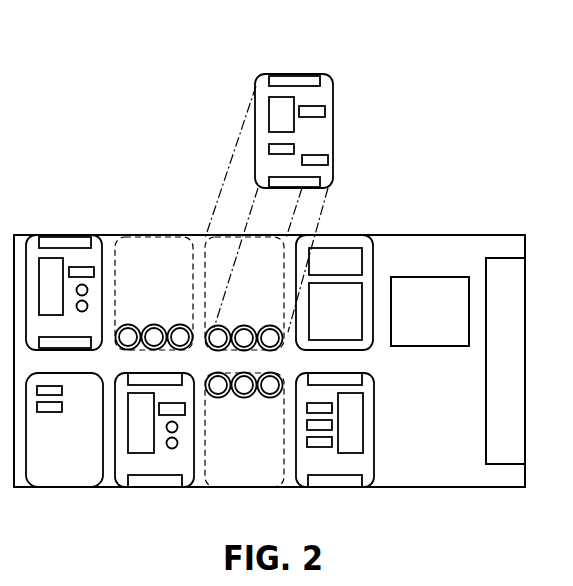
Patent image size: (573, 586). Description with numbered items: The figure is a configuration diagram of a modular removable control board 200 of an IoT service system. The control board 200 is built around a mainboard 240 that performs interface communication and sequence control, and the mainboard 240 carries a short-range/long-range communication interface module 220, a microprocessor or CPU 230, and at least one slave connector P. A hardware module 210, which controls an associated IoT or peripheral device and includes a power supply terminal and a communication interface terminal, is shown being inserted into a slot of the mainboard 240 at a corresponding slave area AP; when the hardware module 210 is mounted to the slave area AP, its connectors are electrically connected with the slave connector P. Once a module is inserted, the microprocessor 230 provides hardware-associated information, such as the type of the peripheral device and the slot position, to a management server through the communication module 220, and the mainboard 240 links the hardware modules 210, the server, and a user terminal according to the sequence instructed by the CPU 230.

The control board 200 is at (485, 46).
The hardware module 210 is at (333, 95).
The communication module 220 is at (503, 268).
The microprocessor 230 is at (405, 290).
The mainboard 240 is at (445, 235).
The slave area AP is at (135, 250).
The slave connector P is at (180, 324).